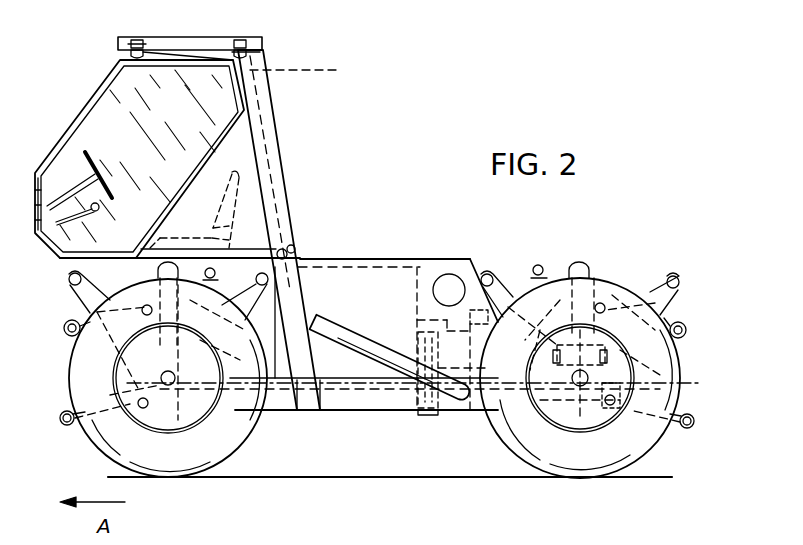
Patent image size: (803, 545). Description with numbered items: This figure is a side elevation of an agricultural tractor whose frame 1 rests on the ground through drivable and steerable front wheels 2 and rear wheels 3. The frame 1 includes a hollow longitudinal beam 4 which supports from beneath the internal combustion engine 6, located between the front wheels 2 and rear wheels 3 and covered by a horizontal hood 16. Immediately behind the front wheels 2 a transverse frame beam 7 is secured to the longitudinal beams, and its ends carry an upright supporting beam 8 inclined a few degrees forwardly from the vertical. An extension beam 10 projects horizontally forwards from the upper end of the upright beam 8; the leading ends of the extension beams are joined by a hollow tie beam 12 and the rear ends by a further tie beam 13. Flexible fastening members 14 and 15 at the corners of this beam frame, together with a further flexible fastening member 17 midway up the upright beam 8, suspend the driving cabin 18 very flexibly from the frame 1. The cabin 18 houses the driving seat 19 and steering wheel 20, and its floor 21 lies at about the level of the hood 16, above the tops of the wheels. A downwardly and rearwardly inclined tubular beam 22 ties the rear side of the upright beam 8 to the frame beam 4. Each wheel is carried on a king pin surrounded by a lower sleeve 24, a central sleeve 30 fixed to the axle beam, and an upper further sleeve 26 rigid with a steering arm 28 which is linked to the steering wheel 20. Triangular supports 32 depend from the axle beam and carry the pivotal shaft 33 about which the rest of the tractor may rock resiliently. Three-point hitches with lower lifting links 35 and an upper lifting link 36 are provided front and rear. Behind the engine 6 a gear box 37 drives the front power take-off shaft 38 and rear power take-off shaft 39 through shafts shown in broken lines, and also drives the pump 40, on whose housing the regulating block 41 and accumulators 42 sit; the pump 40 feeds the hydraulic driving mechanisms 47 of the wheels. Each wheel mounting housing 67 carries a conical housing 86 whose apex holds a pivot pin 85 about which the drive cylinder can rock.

The frame 1 is at (376, 412).
The front wheels 2 is at (175, 478).
The rear wheels 3 is at (516, 458).
The hollow beam 4 is at (345, 412).
The internal combustion engine 6 is at (366, 260).
The transverse frame beam 7 is at (306, 412).
The upright supporting beam 8 is at (284, 186).
The extension beam 10 is at (192, 36).
The tie beam 12 is at (128, 48).
The further tie beam 13 is at (265, 50).
The fastening member 14 is at (135, 34).
The fastening member 15 is at (243, 36).
The hood 16 is at (420, 256).
The fastening member 17 is at (296, 250).
The driving cabin 18 is at (84, 108).
The driving seat 19 is at (194, 209).
The steering wheel 20 is at (110, 172).
The floor 21 is at (58, 260).
The tubular beam 22 is at (343, 334).
The sleeve 24 is at (196, 318).
The further sleeve 26 is at (584, 266).
The steering arm 28 is at (217, 274).
The sleeve 30 is at (183, 302).
The triangular support 32 is at (592, 357).
The pivotal shaft 33 is at (612, 356).
The lower lifting link 35 is at (66, 426).
The upper lifting link 36 is at (63, 329).
The gear box 37 is at (430, 416).
The front power take-off shaft 38 is at (130, 388).
The rear power take-off shaft 39 is at (624, 388).
The pump 40 is at (478, 412).
The regulating block 41 is at (472, 326).
The accumulator 42 is at (450, 274).
The driving mechanism 47 is at (90, 282).
The housing 67 is at (182, 420).
The pivot pin 85 is at (66, 283).
The conical housing 86 is at (654, 278).